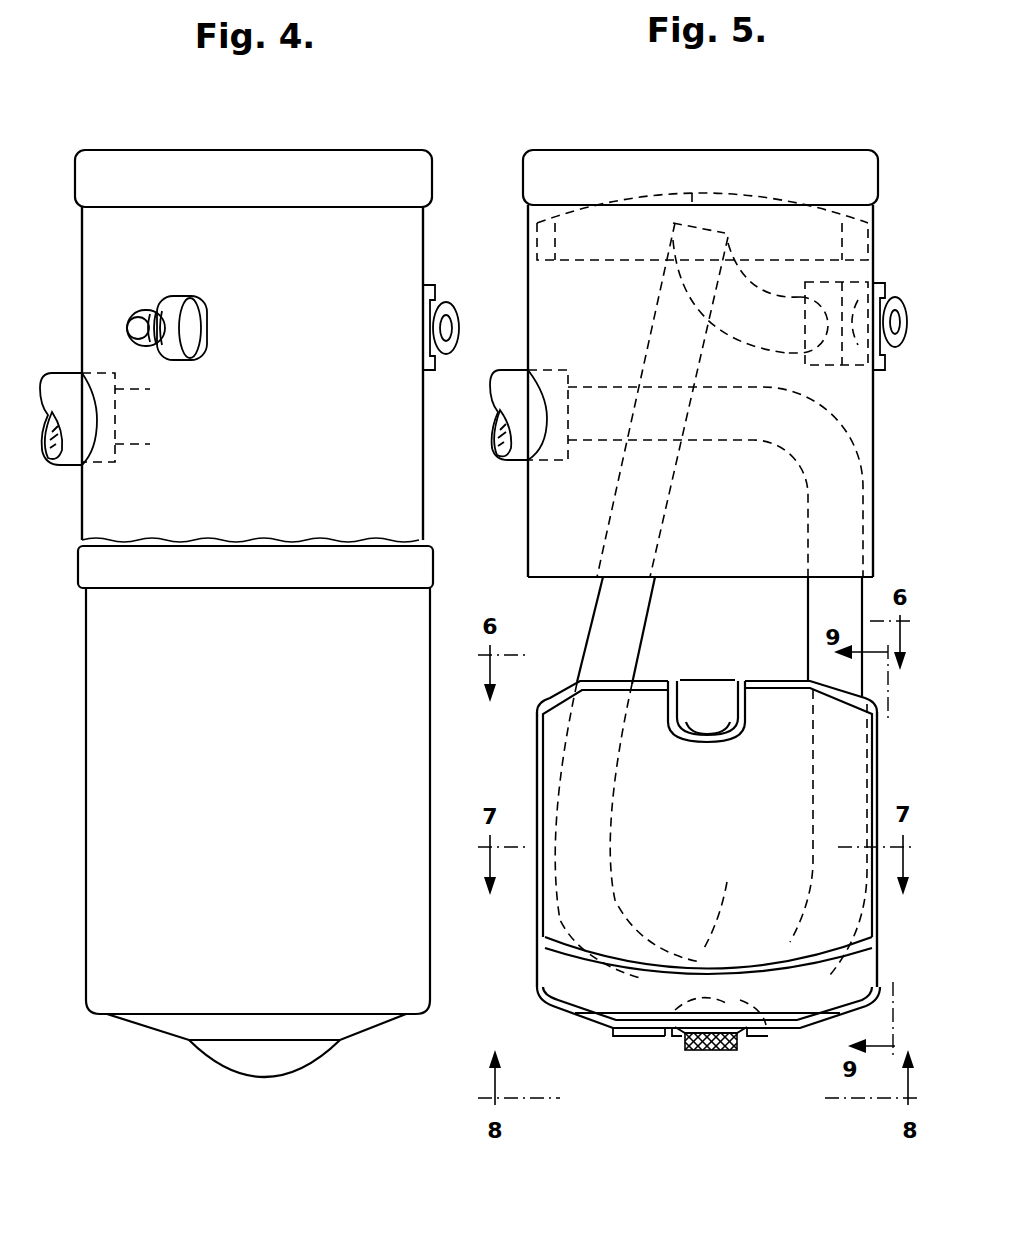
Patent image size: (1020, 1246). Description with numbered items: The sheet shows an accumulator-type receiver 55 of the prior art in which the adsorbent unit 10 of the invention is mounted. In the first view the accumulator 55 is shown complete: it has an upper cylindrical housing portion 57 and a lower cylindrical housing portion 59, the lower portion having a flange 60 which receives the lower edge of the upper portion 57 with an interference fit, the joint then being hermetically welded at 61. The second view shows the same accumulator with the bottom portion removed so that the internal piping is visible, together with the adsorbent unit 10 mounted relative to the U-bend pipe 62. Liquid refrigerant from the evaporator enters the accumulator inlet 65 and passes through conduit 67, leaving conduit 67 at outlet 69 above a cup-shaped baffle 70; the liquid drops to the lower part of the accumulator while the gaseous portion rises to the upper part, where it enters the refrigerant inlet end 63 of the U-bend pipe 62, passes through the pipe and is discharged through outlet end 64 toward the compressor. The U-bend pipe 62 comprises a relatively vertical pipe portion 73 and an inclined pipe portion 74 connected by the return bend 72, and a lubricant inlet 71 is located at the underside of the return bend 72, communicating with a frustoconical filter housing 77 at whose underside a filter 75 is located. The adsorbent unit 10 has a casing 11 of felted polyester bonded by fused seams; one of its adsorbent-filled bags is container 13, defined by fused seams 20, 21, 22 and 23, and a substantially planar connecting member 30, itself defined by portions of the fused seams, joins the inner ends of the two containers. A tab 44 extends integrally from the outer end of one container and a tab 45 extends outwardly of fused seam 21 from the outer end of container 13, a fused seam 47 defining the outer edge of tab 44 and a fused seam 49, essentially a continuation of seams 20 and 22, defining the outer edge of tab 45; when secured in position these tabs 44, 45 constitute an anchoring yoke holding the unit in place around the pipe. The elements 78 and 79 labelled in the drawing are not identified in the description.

In FIG. 4, the adsorbent unit 10 is at (215, 636).
In FIG. 5, the adsorbent unit 10 is at (752, 652).
In FIG. 5, the casing 11 is at (537, 740).
In FIG. 5, the container 13 is at (719, 820).
In FIG. 5, the fused seam 20 is at (878, 755).
In FIG. 5, the fused seam 21 is at (770, 962).
In FIG. 5, the fused seam 22 is at (537, 772).
In FIG. 5, the fused seam 23 is at (714, 742).
In FIG. 5, the connecting member 30 is at (706, 680).
In FIG. 5, the tab 44 is at (570, 1022).
In FIG. 5, the tab 45 is at (615, 1002).
In FIG. 5, the fused seam 47 is at (610, 1036).
In FIG. 5, the fused seam 49 is at (636, 1037).
In FIG. 4, the accumulator-type receiver 55 is at (392, 126).
In FIG. 5, the accumulator-type receiver 55 is at (858, 128).
In FIG. 4, the upper cylindrical housing portion 57 is at (95, 262).
In FIG. 5, the upper cylindrical housing portion 57 is at (540, 283).
In FIG. 4, the lower cylindrical housing portion 59 is at (88, 752).
In FIG. 4, the flange 60 is at (435, 562).
In FIG. 4, the hermetic weld 61 is at (296, 540).
In FIG. 5, the U-bend pipe 62 is at (800, 592).
In FIG. 5, the refrigerant inlet end 63 is at (700, 222).
In FIG. 4, the outlet end 64 is at (70, 472).
In FIG. 5, the outlet end 64 is at (506, 468).
In FIG. 4, the accumulator inlet 65 is at (452, 352).
In FIG. 5, the accumulator inlet 65 is at (890, 348).
In FIG. 5, the conduit 67 is at (778, 292).
In FIG. 5, the outlet 69 is at (692, 200).
In FIG. 5, the cup-shaped baffle 70 is at (613, 225).
In FIG. 5, the lubricant inlet 71 is at (654, 1037).
In FIG. 5, the return bend 72 is at (720, 948).
In FIG. 5, the vertical pipe portion 73 is at (876, 592).
In FIG. 5, the inclined pipe portion 74 is at (645, 608).
In FIG. 5, the filter 75 is at (712, 1052).
In FIG. 5, the frustoconical filter housing 77 is at (766, 1030).
In FIG. 5, the rib 78 is at (686, 1040).
In FIG. 4, the dome 79 is at (300, 1075).